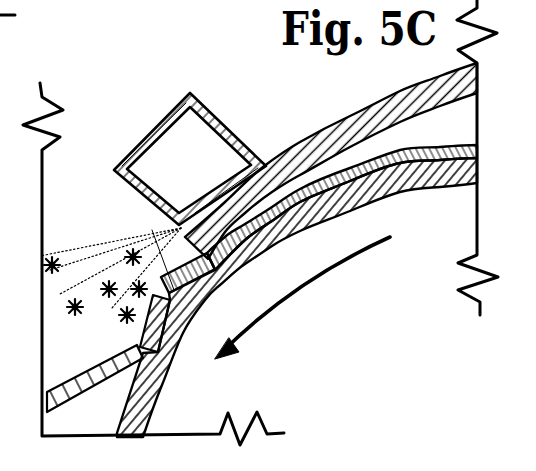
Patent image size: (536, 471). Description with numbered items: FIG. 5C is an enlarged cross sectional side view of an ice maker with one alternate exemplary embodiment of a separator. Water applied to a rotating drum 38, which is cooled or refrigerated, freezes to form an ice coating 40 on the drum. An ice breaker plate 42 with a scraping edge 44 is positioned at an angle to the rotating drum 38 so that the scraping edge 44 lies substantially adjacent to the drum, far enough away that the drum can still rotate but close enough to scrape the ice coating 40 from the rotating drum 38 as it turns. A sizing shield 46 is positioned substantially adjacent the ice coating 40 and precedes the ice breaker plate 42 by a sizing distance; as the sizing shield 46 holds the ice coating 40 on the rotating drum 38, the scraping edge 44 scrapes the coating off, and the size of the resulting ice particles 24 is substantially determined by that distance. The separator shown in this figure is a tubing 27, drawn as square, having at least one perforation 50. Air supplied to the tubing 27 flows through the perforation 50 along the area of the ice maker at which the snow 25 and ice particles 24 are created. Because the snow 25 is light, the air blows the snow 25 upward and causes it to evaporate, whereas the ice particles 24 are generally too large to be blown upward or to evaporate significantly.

The ice particles 24 is at (160, 232).
The snow 25 is at (133, 282).
The tubing 27 is at (157, 124).
The rotating drum 38 is at (472, 166).
The ice coating 40 is at (420, 150).
The ice breaker plate 42 is at (97, 368).
The scraping edge 44 is at (160, 353).
The sizing shield 46 is at (332, 134).
The perforation 50 is at (181, 223).